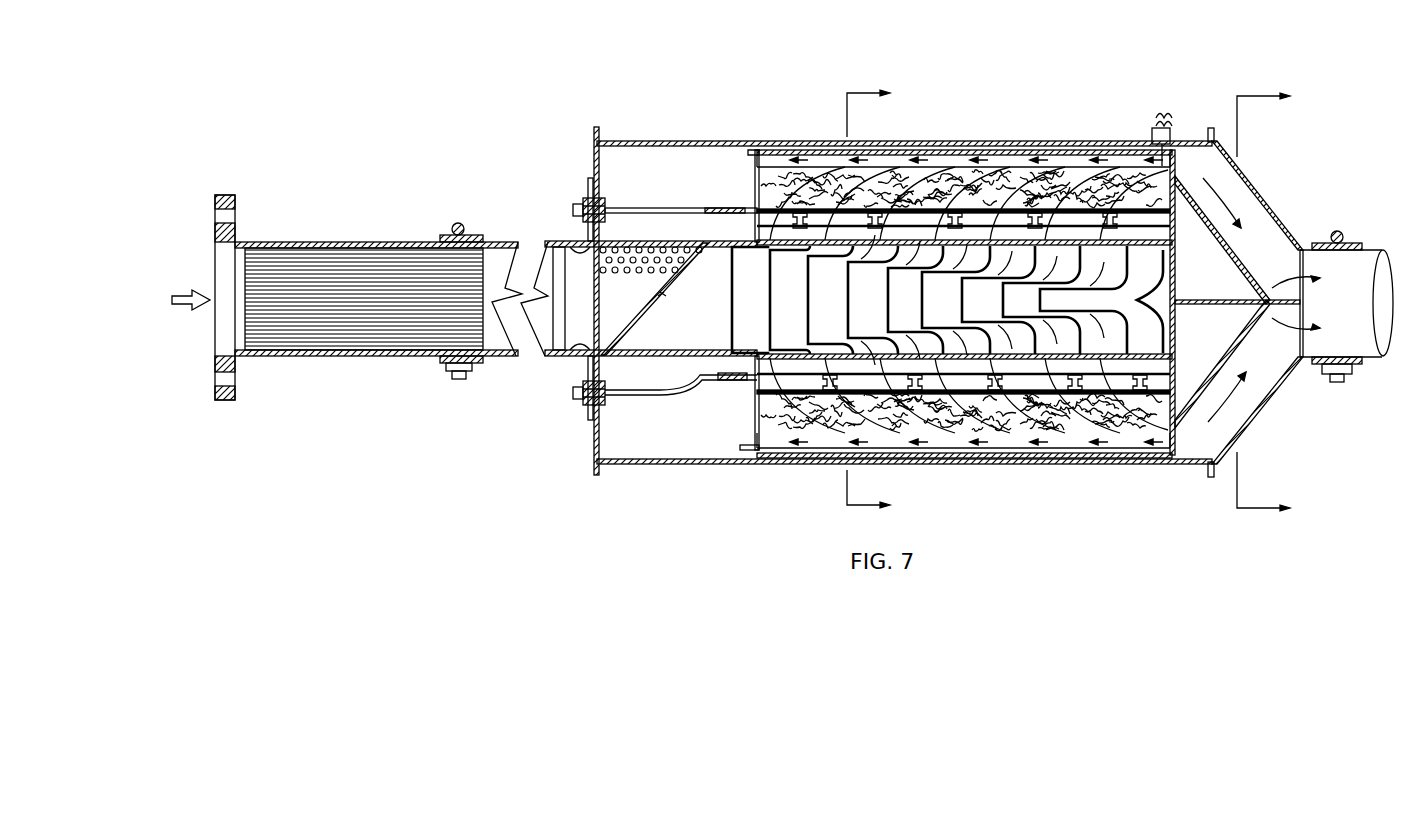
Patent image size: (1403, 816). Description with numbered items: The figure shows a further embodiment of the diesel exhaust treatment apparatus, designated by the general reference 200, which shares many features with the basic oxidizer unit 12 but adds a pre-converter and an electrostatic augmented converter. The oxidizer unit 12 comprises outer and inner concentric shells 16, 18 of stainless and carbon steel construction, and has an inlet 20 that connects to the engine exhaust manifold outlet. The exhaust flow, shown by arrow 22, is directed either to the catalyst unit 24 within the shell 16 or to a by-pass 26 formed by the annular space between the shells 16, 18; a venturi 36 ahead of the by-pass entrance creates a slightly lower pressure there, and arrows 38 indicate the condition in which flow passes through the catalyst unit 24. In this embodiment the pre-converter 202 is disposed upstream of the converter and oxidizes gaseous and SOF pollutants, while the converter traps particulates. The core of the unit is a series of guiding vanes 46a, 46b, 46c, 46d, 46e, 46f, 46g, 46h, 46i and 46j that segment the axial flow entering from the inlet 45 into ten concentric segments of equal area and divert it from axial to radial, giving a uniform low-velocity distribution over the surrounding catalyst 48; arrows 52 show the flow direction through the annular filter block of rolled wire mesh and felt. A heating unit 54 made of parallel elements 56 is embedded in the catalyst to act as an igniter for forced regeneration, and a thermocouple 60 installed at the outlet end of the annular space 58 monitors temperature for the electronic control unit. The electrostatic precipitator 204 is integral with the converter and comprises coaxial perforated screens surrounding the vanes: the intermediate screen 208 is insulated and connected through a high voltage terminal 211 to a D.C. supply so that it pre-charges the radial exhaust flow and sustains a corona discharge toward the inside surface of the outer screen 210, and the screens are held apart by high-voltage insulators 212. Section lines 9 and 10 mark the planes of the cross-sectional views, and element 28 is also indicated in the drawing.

The section line 9- 9 is at (854, 304).
The section line 10- 10 is at (1242, 299).
The oxidizer unit 12 is at (700, 464).
The outer shell 16 is at (838, 141).
The inner shell 18 is at (906, 150).
The inlet 20 is at (215, 272).
The exhaust flow arrow 22 is at (192, 306).
The catalyst unit 24 is at (990, 195).
The by-pass 26 is at (765, 150).
The diagonal baffle 28 is at (667, 298).
The venturi 36 is at (580, 245).
The arrows 38 is at (598, 348).
The inlet 45 is at (722, 352).
The guiding vane 46a is at (755, 250).
The guiding vane 46b is at (788, 254).
The guiding vane 46c is at (815, 346).
The guiding vane 46d is at (860, 262).
The guiding vane 46e is at (890, 338).
The guiding vane 46f is at (940, 270).
The guiding vane 46g is at (968, 334).
The guiding vane 46h is at (1018, 284).
The guiding vane 46i is at (1092, 284).
The guiding vane 46j is at (1168, 282).
The catalyst 48 is at (1042, 222).
The flow direction arrows 52 is at (801, 166).
The heating unit 54 is at (730, 213).
The parallel elements 56 is at (606, 208).
The annular space 58 is at (1162, 442).
The thermocouple 60 is at (1180, 150).
The further embodiment 200 is at (540, 432).
The pre-converter 202 is at (322, 330).
The electrostatic precipitator 204 is at (757, 190).
The intermediate screen 208 is at (750, 378).
The outer screen 210 is at (757, 385).
The high voltage terminal 211 is at (582, 393).
The high-voltage insulators 212 is at (968, 162).